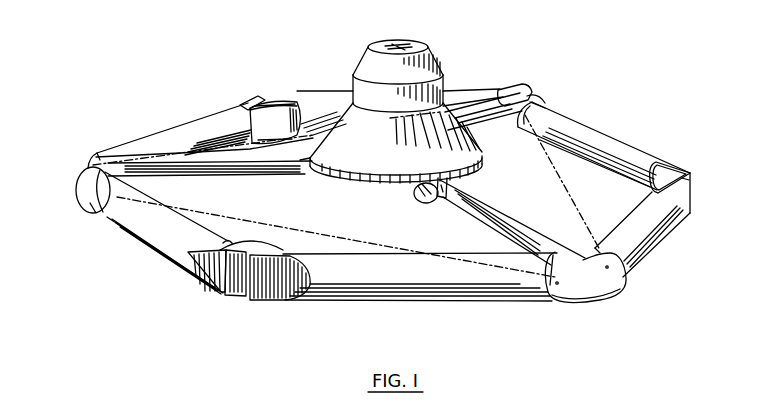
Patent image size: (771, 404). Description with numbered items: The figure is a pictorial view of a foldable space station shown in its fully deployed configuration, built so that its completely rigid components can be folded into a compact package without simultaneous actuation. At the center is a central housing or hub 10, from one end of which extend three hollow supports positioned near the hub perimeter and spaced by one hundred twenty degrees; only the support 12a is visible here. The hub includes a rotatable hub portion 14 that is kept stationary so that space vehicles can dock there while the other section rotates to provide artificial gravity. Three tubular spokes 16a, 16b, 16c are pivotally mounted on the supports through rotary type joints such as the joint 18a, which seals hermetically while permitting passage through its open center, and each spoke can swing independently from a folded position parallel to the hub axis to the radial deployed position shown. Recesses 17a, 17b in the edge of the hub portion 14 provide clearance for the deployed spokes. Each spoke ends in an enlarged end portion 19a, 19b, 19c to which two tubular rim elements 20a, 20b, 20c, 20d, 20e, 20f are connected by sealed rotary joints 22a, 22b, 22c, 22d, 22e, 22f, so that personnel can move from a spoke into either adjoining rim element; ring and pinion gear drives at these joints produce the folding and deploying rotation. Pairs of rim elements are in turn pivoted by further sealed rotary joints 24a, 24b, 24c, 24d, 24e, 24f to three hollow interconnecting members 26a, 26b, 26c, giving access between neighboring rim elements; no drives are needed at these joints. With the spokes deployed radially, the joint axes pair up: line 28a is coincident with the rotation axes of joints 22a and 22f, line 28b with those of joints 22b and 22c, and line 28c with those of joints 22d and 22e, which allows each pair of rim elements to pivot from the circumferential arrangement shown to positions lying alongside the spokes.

The central housing or hub 10 is at (353, 195).
The support 12a is at (416, 201).
The rotatable hub portion 14 is at (420, 50).
The tubular spoke 16a is at (490, 204).
The tubular spoke 16b is at (187, 164).
The tubular spoke 16c is at (478, 130).
The recess 17a is at (433, 171).
The recess 17b is at (311, 161).
The rotary type joint 18a is at (441, 200).
The enlarged end portion 19a is at (605, 301).
The enlarged end portion 19b is at (80, 183).
The enlarged end portion 19c is at (533, 97).
The tubular rim element 20a is at (660, 243).
The tubular rim element 20b is at (388, 288).
The tubular rim element 20c is at (153, 220).
The tubular rim element 20d is at (188, 128).
The tubular rim element 20e is at (338, 94).
The tubular rim element 20f is at (595, 132).
The sealed rotary joint 22a is at (630, 272).
The sealed rotary joint 22b is at (555, 286).
The sealed rotary joint 22c is at (90, 203).
The sealed rotary joint 22d is at (103, 152).
The sealed rotary joint 22e is at (503, 90).
The sealed rotary joint 22f is at (543, 101).
The sealed rotary joint 24a is at (672, 163).
The sealed rotary joint 24b is at (677, 180).
The sealed rotary joint 24c is at (257, 280).
The sealed rotary joint 24d is at (205, 282).
The sealed rotary joint 24e is at (250, 103).
The sealed rotary joint 24f is at (293, 100).
The hollow interconnecting member 26a is at (692, 171).
The hollow interconnecting member 26b is at (233, 296).
The hollow interconnecting member 26c is at (270, 103).
The line 28a is at (560, 172).
The line 28b is at (305, 235).
The line 28c is at (138, 163).